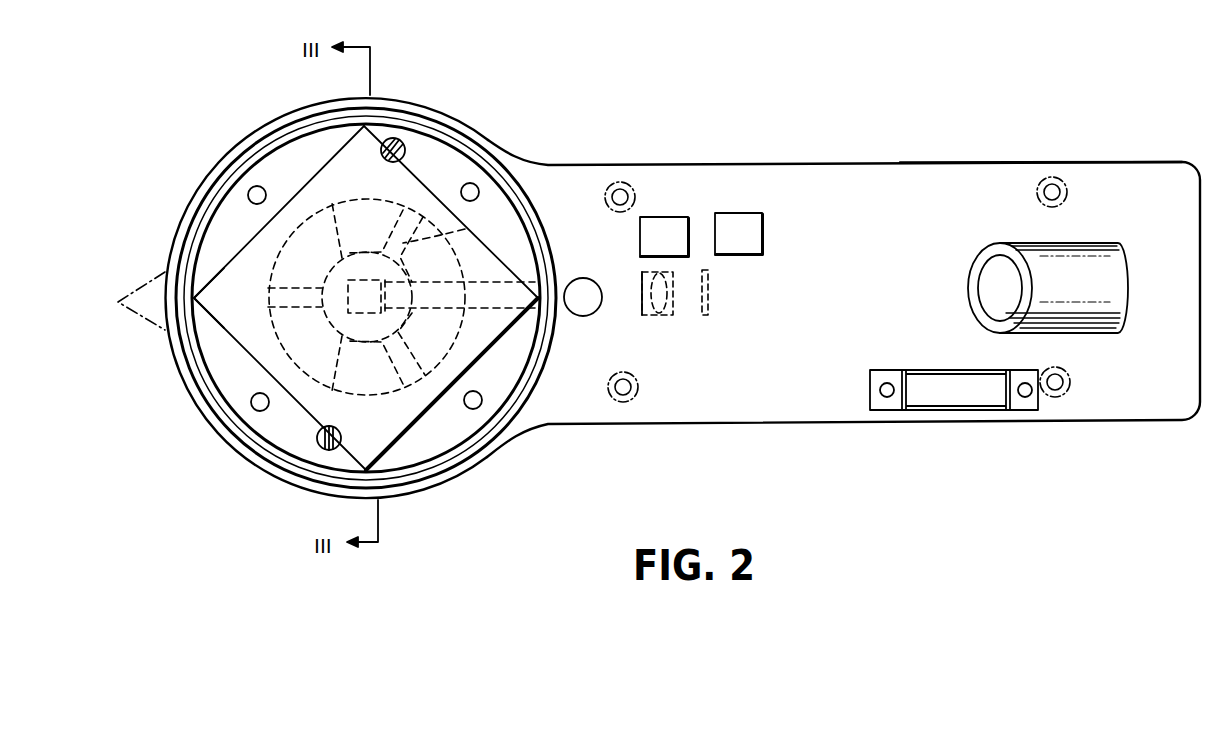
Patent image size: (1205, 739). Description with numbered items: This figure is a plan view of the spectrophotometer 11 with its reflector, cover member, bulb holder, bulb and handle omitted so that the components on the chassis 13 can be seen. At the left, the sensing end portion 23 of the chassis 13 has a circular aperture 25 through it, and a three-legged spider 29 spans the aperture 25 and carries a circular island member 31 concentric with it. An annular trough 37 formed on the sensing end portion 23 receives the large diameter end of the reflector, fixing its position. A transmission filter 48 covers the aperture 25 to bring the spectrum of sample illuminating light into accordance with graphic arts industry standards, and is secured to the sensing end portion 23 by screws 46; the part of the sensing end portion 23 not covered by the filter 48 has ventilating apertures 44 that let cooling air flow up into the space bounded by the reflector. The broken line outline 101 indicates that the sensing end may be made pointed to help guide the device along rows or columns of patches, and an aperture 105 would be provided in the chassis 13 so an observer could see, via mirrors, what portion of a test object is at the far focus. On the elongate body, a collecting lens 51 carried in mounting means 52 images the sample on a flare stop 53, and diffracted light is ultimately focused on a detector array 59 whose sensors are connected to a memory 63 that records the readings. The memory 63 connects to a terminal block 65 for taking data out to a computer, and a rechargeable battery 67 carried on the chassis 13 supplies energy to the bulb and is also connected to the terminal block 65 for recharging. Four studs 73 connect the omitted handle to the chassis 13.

The spectrophotometer 11 is at (747, 164).
The chassis 13 is at (855, 182).
The sensing end portion 23 is at (522, 440).
The aperture 25 is at (342, 258).
The three-legged spider 29 is at (465, 230).
The island member 31 is at (342, 260).
The annular trough 37 is at (200, 212).
The ventilating apertures 44 is at (257, 195).
The screws 46 is at (393, 138).
The transmission filter 48 is at (215, 304).
The collecting lens 51 is at (650, 318).
The mounting means 52 is at (672, 310).
The flare stop 53 is at (710, 298).
The detector array 59 is at (988, 284).
The memory 63 is at (752, 224).
The terminal block 65 is at (968, 395).
The rechargeable battery 67 is at (669, 225).
The studs 73 is at (621, 188).
The broken line outline 101 is at (163, 272).
The aperture 105 is at (580, 291).